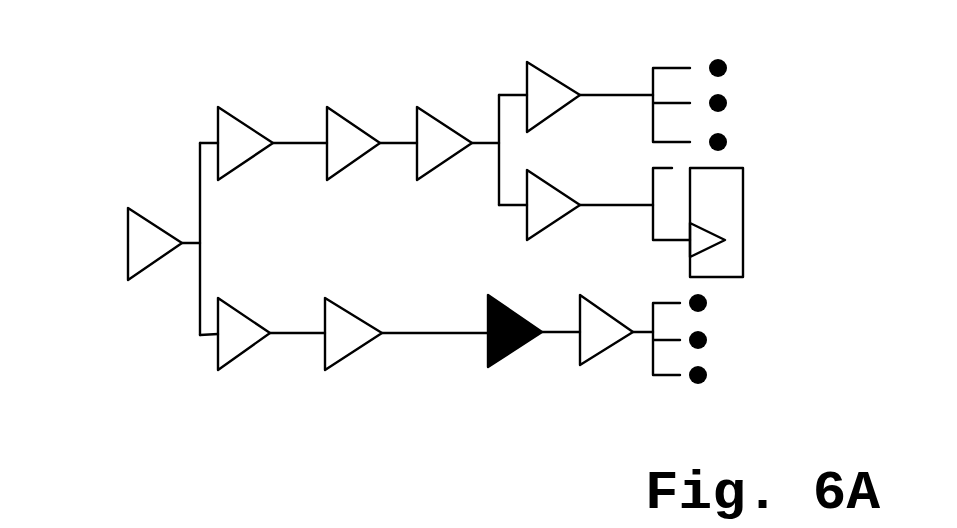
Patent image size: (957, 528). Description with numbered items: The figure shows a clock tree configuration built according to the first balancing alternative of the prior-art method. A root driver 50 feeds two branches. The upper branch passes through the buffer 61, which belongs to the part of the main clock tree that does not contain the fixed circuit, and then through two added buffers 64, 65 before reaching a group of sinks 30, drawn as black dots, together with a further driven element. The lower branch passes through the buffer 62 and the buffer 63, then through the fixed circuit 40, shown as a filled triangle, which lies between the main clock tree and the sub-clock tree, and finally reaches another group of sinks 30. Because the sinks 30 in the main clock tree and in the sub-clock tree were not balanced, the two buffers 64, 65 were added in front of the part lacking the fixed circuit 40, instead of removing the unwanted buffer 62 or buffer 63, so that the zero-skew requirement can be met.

The sinks 30 is at (722, 341).
The fixed circuit 40 is at (515, 355).
The root driver 50 is at (124, 241).
The buffer 61 is at (252, 118).
The buffer 62 is at (248, 356).
The buffer 63 is at (361, 357).
The buffer 64 is at (355, 116).
The buffer 65 is at (448, 118).